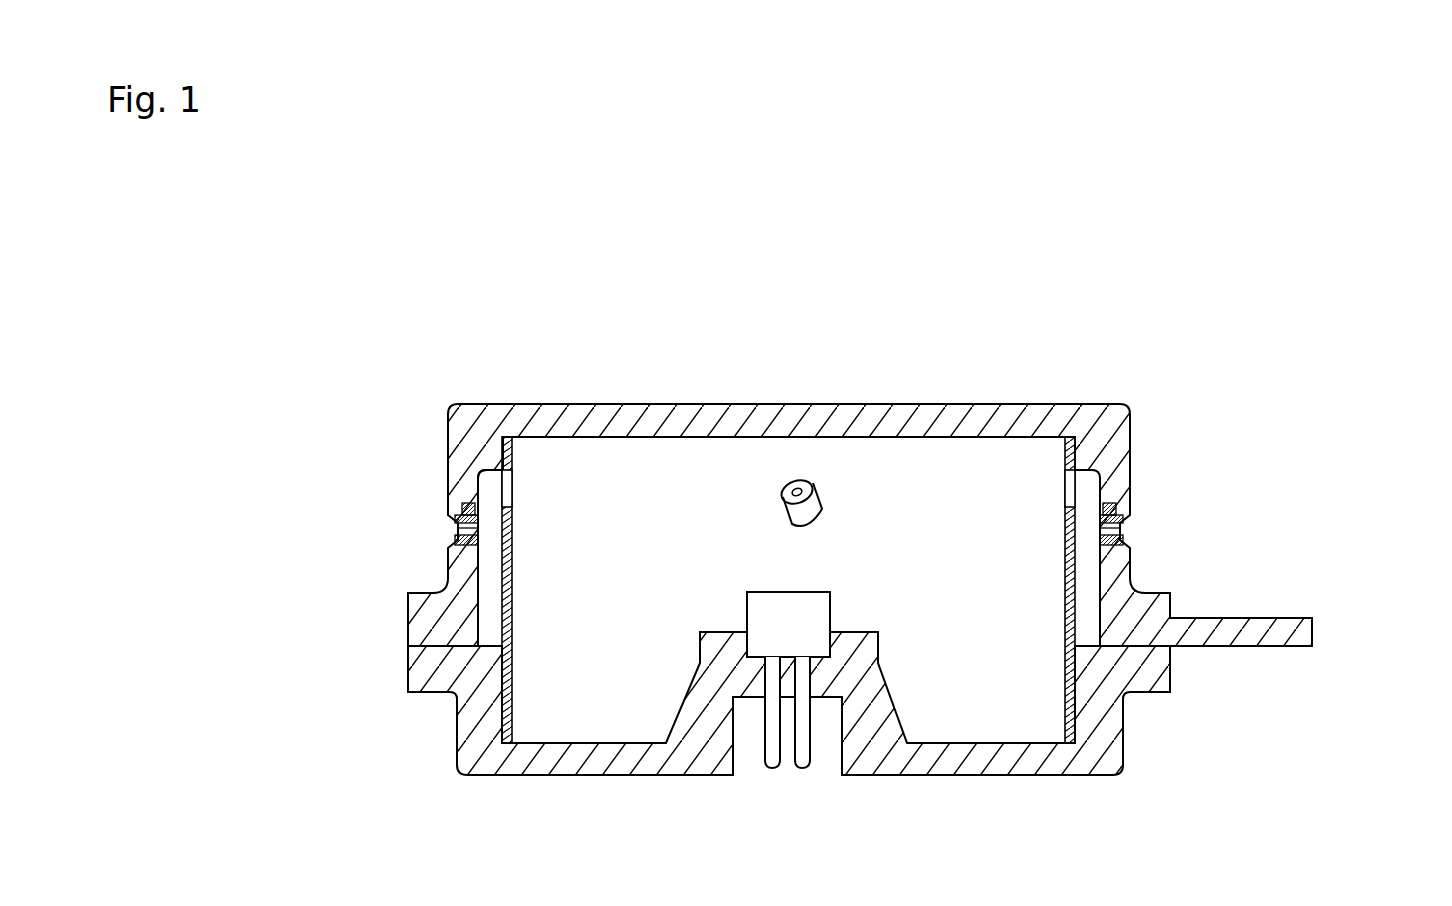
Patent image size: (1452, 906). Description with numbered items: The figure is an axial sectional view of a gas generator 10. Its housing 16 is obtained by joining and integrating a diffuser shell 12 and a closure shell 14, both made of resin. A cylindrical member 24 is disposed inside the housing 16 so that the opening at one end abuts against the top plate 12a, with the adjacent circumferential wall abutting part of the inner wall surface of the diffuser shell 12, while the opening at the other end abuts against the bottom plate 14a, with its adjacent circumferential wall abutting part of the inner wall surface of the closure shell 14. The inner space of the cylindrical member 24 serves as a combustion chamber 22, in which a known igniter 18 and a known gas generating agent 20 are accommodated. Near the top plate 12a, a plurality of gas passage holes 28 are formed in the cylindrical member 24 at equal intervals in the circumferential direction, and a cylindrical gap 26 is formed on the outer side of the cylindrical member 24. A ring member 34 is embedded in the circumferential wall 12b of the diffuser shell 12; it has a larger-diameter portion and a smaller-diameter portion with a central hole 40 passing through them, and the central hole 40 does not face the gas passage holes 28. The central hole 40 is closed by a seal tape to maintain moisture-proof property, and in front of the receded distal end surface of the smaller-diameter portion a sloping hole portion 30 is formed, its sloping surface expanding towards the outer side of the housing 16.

The gas generator 10 is at (958, 372).
The diffuser shell 12 is at (1297, 633).
The top plate 12a is at (707, 440).
The circumferential wall 12b is at (448, 462).
The closure shell 14 is at (1163, 672).
The bottom plate 14a is at (568, 740).
The housing 16 is at (1385, 613).
The igniter 18 is at (807, 641).
The gas generating agent 20 is at (815, 505).
The combustion chamber 22 is at (993, 553).
The cylindrical member 24 is at (513, 595).
The cylindrical gap 26 is at (500, 468).
The gas passage holes 28 is at (513, 487).
The sloping hole portion 30 is at (1118, 518).
The ring member 34 is at (463, 538).
The central hole 40 is at (462, 527).